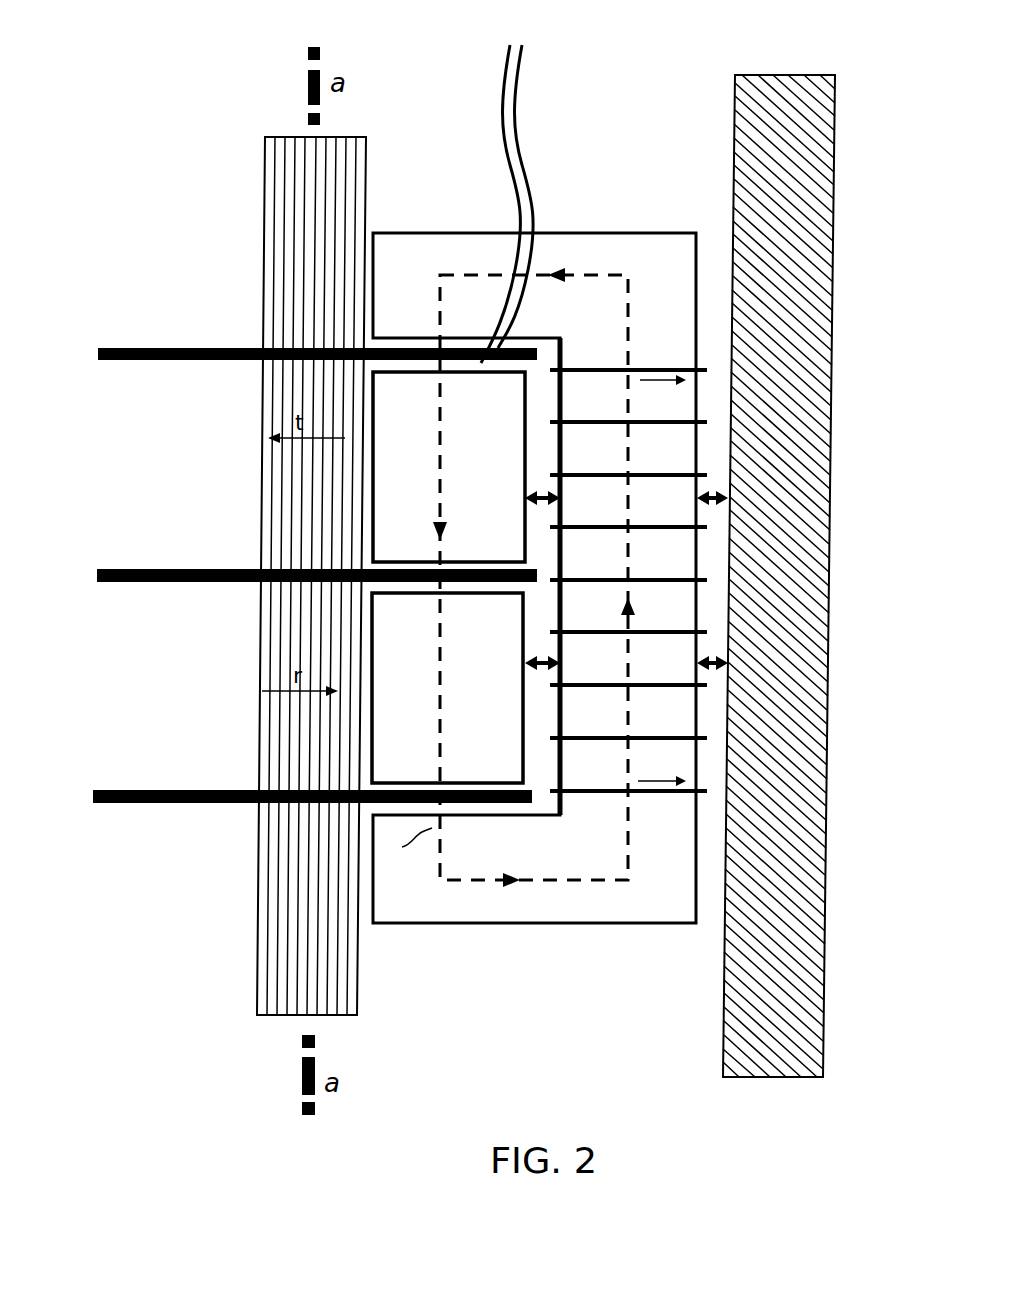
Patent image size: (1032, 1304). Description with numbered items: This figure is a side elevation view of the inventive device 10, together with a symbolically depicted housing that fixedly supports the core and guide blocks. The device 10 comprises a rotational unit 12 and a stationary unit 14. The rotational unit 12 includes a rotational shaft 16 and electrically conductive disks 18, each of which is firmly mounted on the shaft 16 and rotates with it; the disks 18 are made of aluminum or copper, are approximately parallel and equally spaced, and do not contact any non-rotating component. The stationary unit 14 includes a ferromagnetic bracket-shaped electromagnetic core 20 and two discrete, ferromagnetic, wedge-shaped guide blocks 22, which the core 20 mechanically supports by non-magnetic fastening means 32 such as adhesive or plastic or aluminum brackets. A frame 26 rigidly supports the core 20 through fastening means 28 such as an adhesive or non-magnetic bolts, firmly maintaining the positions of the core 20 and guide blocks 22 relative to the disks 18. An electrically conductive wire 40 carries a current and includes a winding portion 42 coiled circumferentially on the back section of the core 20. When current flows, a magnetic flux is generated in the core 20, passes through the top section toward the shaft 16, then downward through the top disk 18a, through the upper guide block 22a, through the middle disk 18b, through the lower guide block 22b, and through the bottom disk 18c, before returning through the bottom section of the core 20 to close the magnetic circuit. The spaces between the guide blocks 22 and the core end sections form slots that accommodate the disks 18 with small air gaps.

The inventive device 10 is at (136, 113).
The rotational unit 12 is at (250, 475).
The stationary unit 14 is at (556, 222).
The rotational shaft 16 is at (270, 927).
The electrically conductive disk 18 is at (299, 540).
The top disk 18a is at (170, 347).
The middle disk 18b is at (167, 563).
The bottom disk 18c is at (167, 788).
The bracket-shaped electromagnetic core 20 is at (650, 908).
The wedge-shaped guide block 22 is at (330, 577).
The upper guide block 22a is at (400, 402).
The lower guide block 22b is at (398, 623).
The frame 26 is at (828, 648).
The fastening means 28 is at (712, 508).
The fastening means 32 is at (532, 489).
The electrically conductive wire 40 is at (594, 435).
The winding portion 42 is at (653, 366).